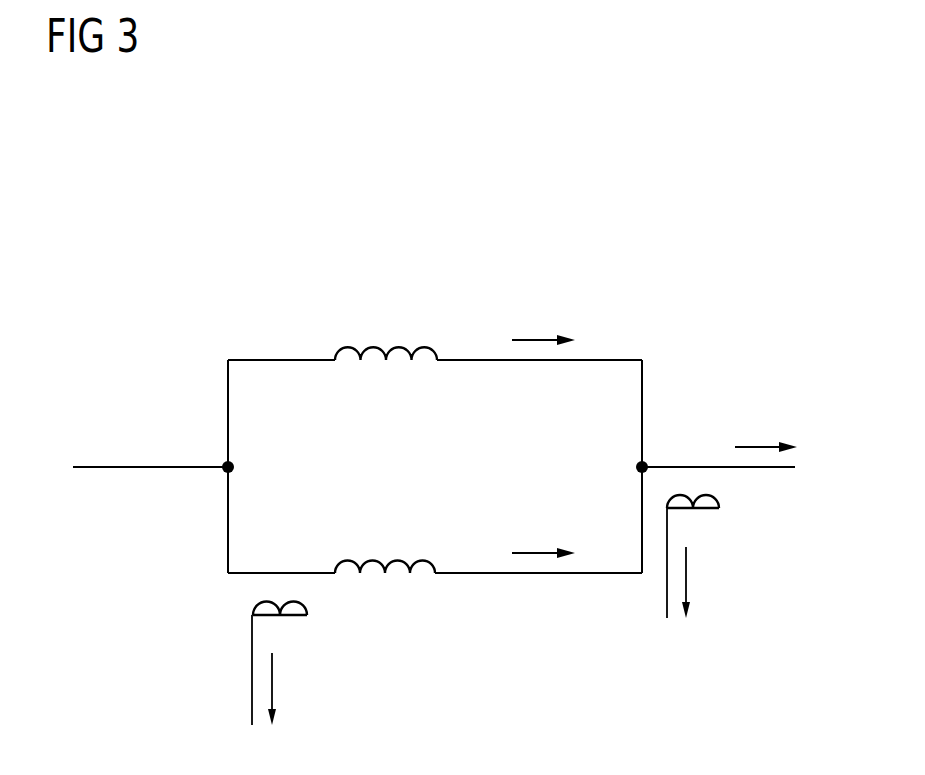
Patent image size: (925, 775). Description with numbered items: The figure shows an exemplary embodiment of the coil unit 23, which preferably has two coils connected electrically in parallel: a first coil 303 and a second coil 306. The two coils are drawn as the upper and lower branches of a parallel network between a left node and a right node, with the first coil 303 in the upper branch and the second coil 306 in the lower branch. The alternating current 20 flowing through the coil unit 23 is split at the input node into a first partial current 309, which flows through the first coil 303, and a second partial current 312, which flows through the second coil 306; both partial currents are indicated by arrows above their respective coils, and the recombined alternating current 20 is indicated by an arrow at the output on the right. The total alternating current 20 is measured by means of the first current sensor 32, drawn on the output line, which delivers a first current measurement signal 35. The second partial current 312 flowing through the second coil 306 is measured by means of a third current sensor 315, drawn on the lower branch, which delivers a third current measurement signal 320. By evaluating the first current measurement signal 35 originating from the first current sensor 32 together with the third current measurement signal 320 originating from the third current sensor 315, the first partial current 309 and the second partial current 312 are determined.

The alternating current 20 is at (754, 447).
The coil unit 23 is at (749, 277).
The first current sensor 32 is at (720, 500).
The first current measurement signal 35 is at (686, 570).
The first coil 303 is at (372, 348).
The second coil 306 is at (372, 560).
The first partial current 309 is at (533, 340).
The second partial current 312 is at (536, 553).
The third current sensor 315 is at (253, 607).
The third current measurement signal 320 is at (272, 676).